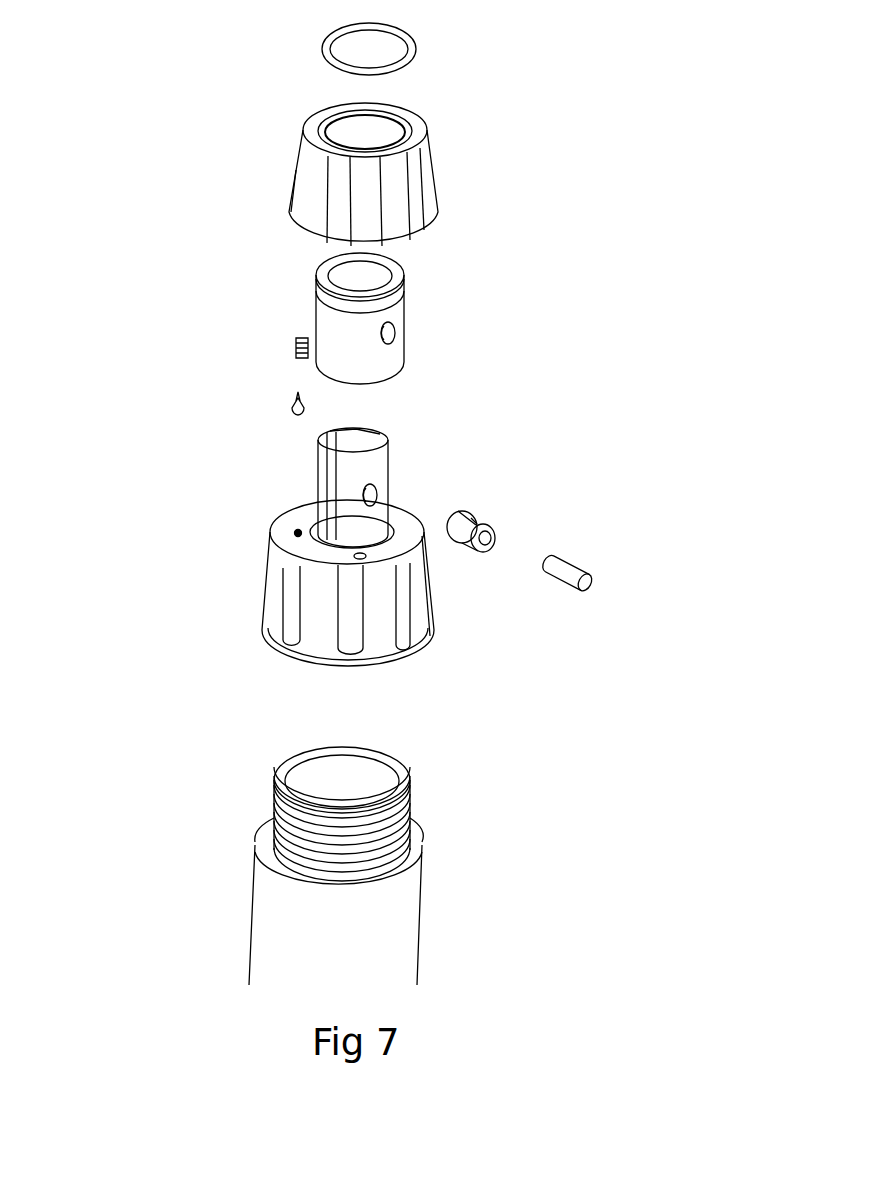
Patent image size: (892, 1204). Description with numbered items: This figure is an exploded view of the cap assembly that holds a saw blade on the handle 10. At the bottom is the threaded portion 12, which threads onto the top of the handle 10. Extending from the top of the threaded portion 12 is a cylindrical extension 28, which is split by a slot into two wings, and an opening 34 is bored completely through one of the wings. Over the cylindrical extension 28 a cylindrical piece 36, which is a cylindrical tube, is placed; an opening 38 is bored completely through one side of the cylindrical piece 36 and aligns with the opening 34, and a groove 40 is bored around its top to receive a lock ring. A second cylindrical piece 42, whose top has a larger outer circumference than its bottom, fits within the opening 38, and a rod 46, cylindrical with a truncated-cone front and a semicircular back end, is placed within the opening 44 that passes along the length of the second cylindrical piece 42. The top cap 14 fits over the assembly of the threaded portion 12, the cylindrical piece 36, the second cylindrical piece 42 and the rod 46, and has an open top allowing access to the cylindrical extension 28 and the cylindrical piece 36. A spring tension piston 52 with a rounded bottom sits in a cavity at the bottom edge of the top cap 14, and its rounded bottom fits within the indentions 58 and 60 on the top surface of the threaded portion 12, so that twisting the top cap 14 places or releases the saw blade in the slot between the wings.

The handle 10 is at (375, 922).
The threaded portion 12 is at (323, 620).
The top cap 14 is at (432, 182).
The cylindrical extension 28 is at (318, 507).
The opening 34 is at (373, 491).
The cylindrical piece 36 is at (401, 362).
The opening 38 is at (396, 332).
The groove 40 is at (403, 302).
The second cylindrical piece 42 is at (495, 530).
The opening 44 is at (485, 540).
The rod 46 is at (577, 572).
The spring tension piston 52 is at (290, 386).
The indention 58 is at (296, 532).
The indention 60 is at (362, 557).